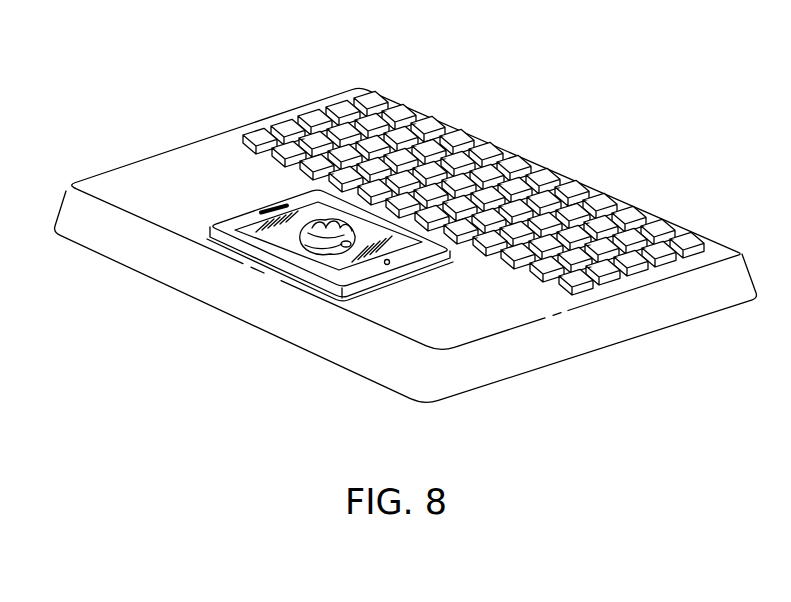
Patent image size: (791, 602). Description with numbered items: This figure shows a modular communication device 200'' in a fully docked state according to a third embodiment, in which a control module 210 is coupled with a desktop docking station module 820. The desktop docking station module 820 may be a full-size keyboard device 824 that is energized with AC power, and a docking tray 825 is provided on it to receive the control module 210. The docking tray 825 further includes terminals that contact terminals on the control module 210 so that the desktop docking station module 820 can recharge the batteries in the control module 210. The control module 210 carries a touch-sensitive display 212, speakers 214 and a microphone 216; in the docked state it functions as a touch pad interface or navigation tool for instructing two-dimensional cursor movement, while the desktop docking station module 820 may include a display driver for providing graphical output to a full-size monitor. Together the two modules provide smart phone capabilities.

The modular communication device 200'' is at (580, 41).
The desktop docking station module 820 is at (202, 139).
The full-size keyboard device 824 is at (569, 189).
The docking tray 825 is at (330, 290).
The control module 210 is at (233, 219).
The display 212 is at (293, 254).
The speakers 214 is at (280, 206).
The microphone 216 is at (390, 264).